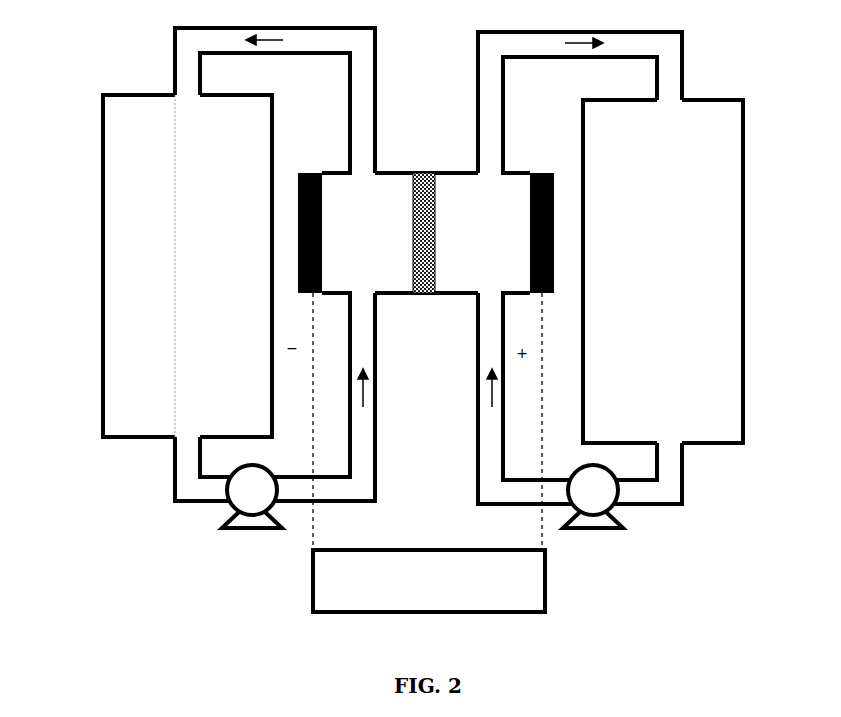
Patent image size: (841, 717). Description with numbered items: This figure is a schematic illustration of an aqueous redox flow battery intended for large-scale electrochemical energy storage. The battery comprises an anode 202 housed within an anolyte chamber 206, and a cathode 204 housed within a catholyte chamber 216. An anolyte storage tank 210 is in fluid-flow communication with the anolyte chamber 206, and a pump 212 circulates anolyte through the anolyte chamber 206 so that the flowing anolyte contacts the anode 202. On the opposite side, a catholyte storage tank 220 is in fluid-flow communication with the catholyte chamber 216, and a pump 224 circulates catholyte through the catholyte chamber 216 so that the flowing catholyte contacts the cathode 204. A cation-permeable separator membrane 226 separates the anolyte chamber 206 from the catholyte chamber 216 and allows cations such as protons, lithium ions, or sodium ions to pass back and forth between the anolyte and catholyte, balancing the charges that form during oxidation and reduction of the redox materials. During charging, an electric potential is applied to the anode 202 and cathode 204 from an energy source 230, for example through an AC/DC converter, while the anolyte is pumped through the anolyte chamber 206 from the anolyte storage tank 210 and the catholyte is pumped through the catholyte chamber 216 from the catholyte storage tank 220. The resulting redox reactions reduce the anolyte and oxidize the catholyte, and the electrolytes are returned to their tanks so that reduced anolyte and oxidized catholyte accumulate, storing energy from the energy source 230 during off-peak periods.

The anode 202 is at (312, 170).
The cathode 204 is at (542, 172).
The anolyte chamber 206 is at (383, 188).
The anolyte storage tank 210 is at (122, 192).
The pump 212 is at (243, 495).
The catholyte chamber 216 is at (472, 272).
The catholyte storage tank 220 is at (722, 202).
The pump 224 is at (603, 497).
The cation-permeable separator membrane 226 is at (425, 175).
The energy source 230 is at (512, 592).